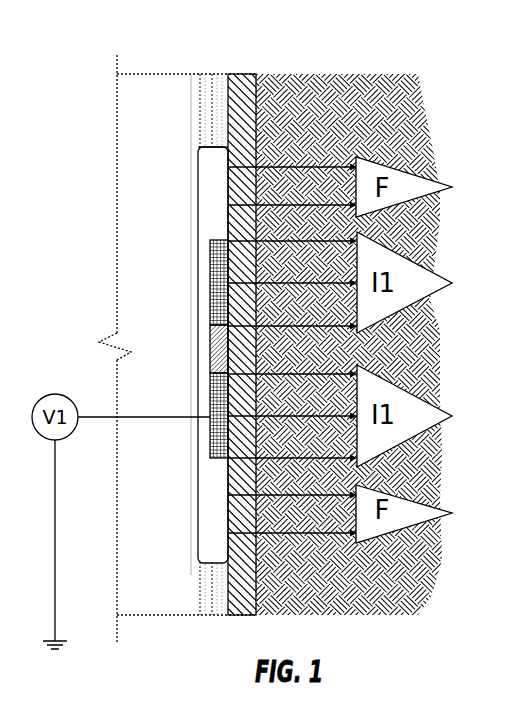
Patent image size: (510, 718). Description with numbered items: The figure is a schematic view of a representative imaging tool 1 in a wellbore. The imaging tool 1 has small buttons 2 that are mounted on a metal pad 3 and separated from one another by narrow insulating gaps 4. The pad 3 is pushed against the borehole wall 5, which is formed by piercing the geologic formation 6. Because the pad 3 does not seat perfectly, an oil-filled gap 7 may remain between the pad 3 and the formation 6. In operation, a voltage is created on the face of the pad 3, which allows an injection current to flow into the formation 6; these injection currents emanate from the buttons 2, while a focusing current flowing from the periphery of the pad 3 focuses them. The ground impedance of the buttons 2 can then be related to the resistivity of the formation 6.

The imaging tool 1 is at (187, 561).
The small buttons 2 is at (210, 302).
The metal pad 3 is at (198, 188).
The narrow insulating gaps 4 is at (210, 355).
The borehole wall 5 is at (228, 148).
The geologic formation 6 is at (380, 58).
The oil-filled gap 7 is at (242, 74).